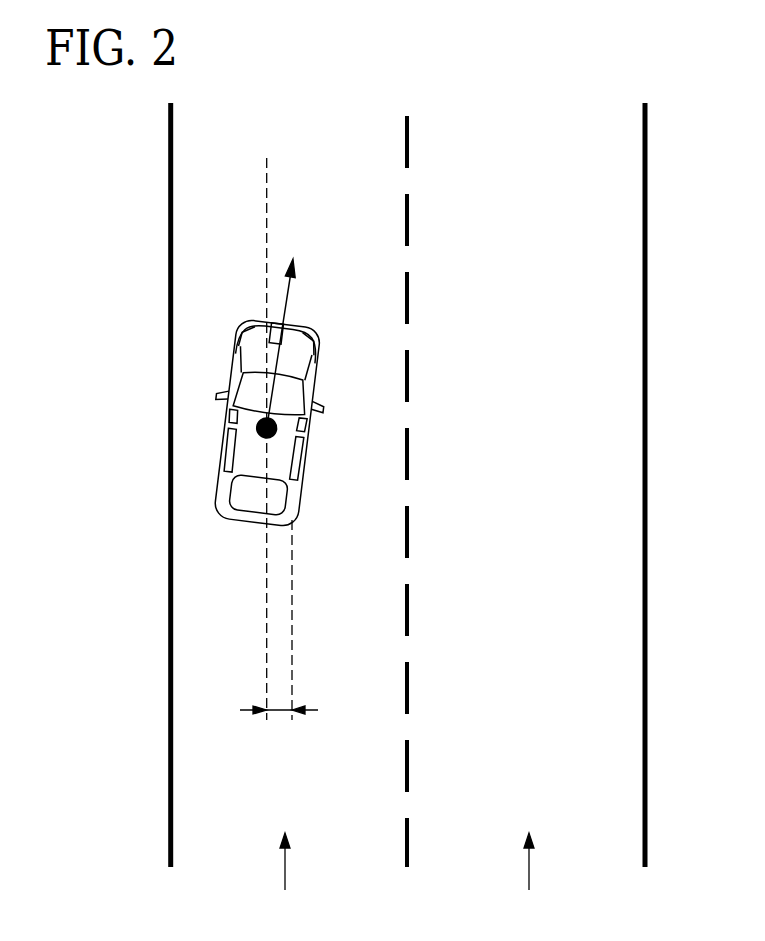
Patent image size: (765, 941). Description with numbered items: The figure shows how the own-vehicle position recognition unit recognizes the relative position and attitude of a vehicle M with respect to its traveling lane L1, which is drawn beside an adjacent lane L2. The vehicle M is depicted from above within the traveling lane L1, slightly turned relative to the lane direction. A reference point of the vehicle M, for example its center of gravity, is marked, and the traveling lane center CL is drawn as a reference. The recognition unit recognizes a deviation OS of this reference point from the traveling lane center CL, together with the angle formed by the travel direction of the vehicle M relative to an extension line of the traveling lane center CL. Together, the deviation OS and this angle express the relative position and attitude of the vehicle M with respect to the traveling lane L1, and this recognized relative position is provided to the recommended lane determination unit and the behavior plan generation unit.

The vehicle M is at (222, 442).
The traveling lane center CL is at (292, 605).
The deviation OS is at (279, 730).
The traveling lane L1 is at (302, 927).
The second lane (adjacent lane) L2 is at (547, 927).